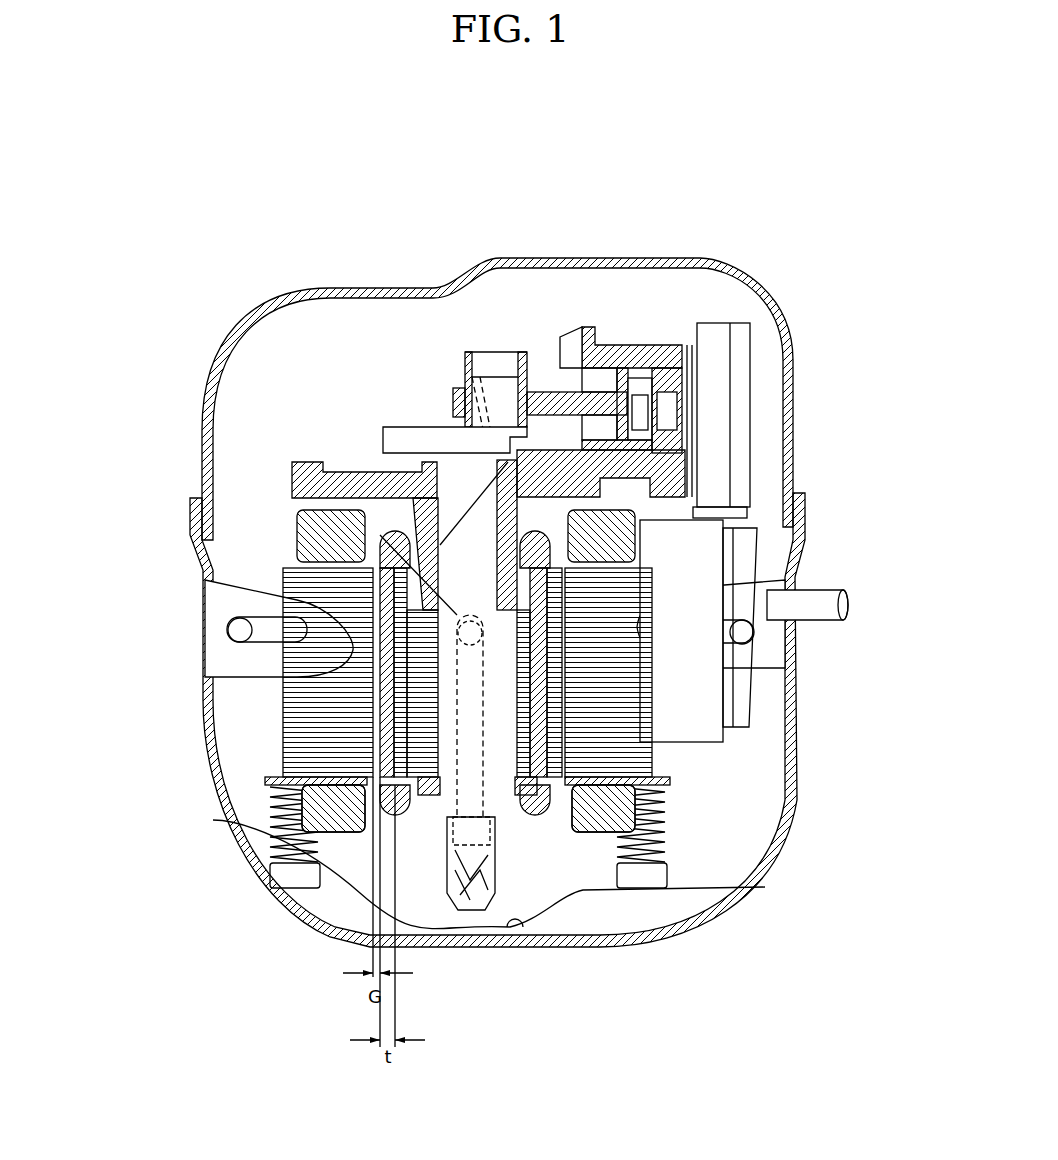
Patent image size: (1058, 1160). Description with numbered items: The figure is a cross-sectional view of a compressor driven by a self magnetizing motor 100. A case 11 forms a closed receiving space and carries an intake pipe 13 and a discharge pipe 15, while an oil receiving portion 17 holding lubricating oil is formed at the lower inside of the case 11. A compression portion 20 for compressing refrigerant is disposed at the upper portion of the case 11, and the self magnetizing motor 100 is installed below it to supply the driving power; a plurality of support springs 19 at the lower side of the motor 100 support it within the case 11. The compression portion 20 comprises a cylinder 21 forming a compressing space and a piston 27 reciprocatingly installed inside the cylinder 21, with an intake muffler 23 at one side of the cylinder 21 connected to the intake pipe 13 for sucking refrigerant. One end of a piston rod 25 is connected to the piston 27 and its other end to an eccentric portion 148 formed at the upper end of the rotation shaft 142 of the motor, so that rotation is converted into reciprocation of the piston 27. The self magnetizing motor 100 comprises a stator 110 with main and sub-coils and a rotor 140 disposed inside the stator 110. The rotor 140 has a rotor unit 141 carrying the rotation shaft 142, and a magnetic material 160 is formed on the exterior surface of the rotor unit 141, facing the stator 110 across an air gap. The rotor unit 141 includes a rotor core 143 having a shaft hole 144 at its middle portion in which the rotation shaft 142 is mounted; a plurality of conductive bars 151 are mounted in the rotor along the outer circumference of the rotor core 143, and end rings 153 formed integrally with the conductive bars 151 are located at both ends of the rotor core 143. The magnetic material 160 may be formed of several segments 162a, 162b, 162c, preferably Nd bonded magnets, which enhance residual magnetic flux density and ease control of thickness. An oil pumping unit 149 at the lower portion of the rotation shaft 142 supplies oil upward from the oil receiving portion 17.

The case 11 is at (805, 429).
The intake pipe 13 is at (852, 606).
The discharge pipe 15 is at (238, 616).
The oil receiving portion 17 is at (516, 930).
The support springs 19 is at (268, 828).
The compression portion 20 is at (755, 167).
The cylinder 21 is at (617, 337).
The intake muffler 23 is at (735, 400).
The piston rod 25 is at (550, 397).
The piston 27 is at (730, 367).
The self magnetizing motor 100 is at (560, 1078).
The stator 110 is at (607, 834).
The rotor 140 is at (625, 1028).
The rotor unit 141 is at (446, 602).
The rotation shaft 142 is at (455, 485).
The rotor core 143 is at (345, 500).
The shaft hole 144 is at (418, 472).
The eccentric portion 148 is at (498, 388).
The oil pumping unit 149 is at (460, 912).
The conductive bars 151 is at (389, 567).
The end rings 153 is at (518, 367).
The magnetic material 160 is at (364, 770).
The segment 162a is at (365, 642).
The segment 162b is at (360, 683).
The segment 162c is at (355, 722).